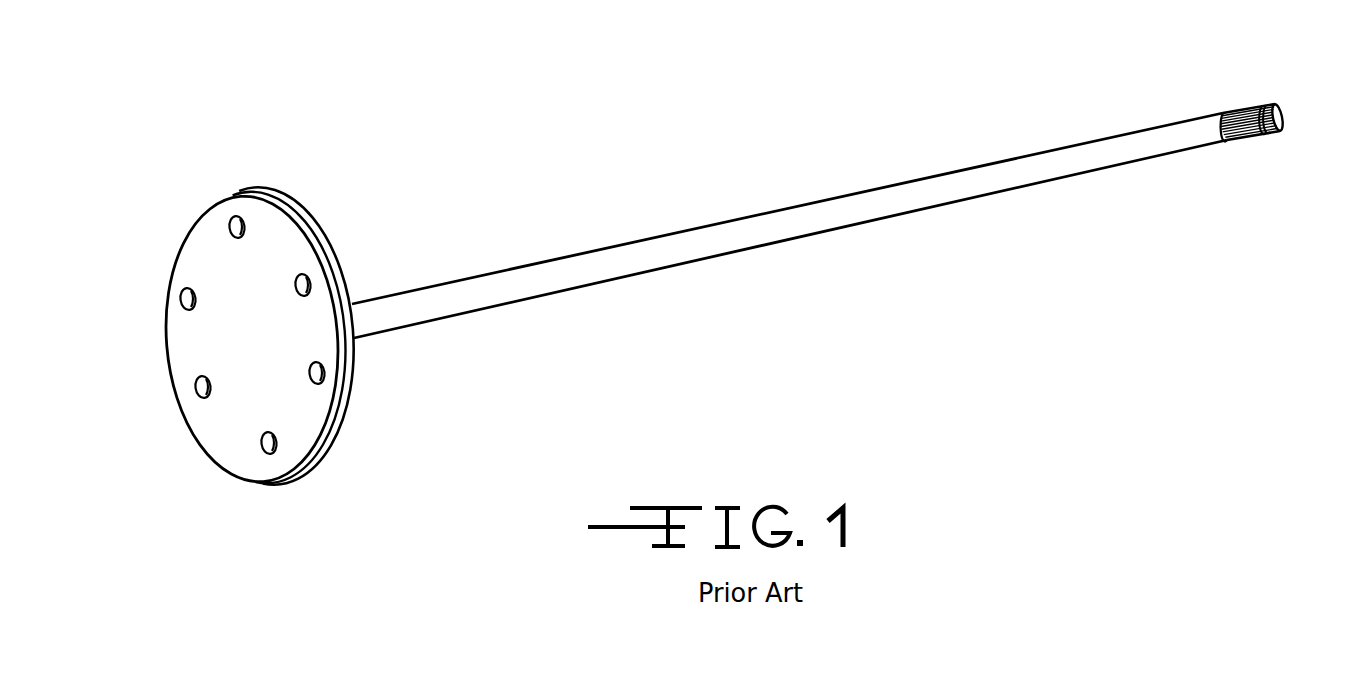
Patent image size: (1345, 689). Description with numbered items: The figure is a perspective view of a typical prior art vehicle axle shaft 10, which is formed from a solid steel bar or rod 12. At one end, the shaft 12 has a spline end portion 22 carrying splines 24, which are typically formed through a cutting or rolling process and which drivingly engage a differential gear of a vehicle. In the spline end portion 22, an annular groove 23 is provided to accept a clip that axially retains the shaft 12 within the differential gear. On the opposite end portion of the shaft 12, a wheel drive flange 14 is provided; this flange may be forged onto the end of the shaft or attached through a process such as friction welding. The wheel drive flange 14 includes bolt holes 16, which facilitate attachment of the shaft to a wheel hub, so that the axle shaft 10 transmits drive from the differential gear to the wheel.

The vehicle axle shaft 10 is at (726, 159).
The solid steel bar or rod 12 is at (889, 183).
The wheel drive flange 14 is at (265, 186).
The bolt holes 16 is at (186, 296).
The spline end portion 22 is at (1267, 102).
The annular groove 23 is at (1275, 135).
The splines 24 is at (1250, 137).